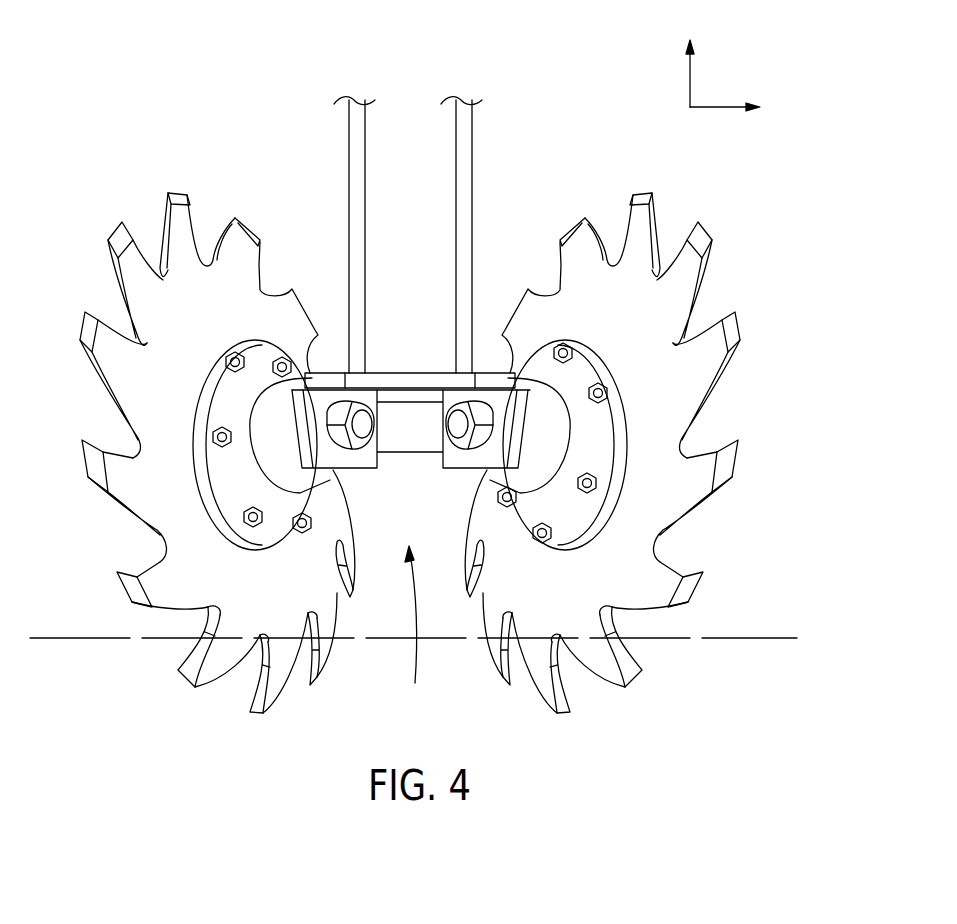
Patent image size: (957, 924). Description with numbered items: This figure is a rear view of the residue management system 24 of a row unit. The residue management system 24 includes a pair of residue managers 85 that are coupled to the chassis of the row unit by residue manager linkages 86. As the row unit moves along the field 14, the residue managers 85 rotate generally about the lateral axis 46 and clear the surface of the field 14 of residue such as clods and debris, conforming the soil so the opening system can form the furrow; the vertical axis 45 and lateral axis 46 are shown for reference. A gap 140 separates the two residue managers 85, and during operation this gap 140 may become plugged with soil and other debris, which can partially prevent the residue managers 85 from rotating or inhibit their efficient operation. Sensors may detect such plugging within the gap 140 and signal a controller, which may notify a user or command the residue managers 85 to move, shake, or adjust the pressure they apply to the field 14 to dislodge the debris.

The field 14 is at (682, 640).
The residue management system 24 is at (696, 186).
The vertical axis 45 is at (690, 80).
The lateral axis 46 is at (715, 108).
The residue managers 85 is at (110, 262).
The residue manager linkages 86 is at (349, 165).
The gap 140 is at (417, 628).